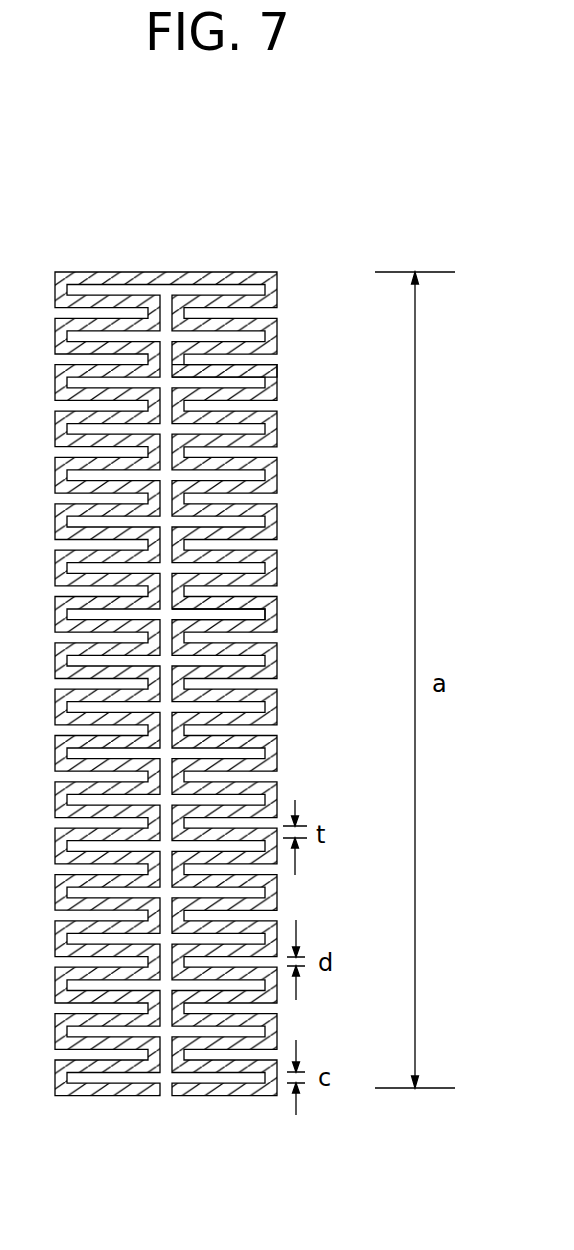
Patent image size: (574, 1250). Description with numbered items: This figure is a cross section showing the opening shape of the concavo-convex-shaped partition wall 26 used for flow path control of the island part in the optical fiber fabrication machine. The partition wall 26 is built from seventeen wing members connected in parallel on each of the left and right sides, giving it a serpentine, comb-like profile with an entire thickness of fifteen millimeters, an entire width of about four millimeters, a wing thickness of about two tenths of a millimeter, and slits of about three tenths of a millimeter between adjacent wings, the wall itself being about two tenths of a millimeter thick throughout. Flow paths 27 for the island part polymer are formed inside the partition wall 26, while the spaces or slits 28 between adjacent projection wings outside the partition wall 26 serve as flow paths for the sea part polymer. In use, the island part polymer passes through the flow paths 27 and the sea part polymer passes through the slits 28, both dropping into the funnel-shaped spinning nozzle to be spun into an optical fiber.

The partition wall 26 is at (192, 264).
The flow paths of the island part polymer 27 is at (258, 567).
The flow paths for the sea part polymer 28 is at (277, 361).